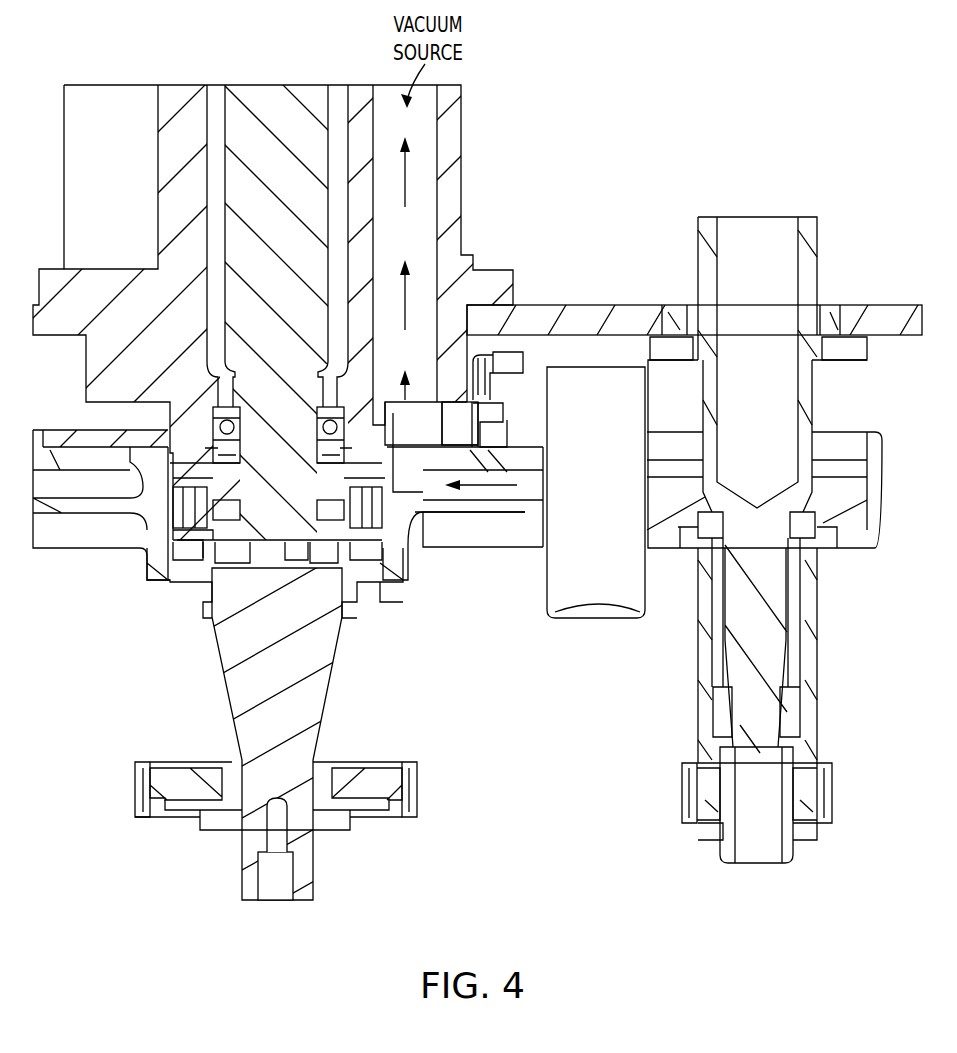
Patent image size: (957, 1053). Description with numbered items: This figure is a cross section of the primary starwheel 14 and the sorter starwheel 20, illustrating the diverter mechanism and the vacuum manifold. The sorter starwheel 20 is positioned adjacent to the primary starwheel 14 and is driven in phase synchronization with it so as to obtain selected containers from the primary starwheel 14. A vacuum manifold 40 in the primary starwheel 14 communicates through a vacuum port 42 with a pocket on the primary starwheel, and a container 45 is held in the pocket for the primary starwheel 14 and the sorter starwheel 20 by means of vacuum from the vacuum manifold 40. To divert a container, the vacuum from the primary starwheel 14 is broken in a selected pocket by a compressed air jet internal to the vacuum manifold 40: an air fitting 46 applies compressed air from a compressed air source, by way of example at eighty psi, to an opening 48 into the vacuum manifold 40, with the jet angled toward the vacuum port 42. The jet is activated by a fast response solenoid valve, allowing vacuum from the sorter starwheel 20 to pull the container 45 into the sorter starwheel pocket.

The primary starwheel 14 is at (424, 548).
The sorter starwheel 20 is at (660, 550).
The vacuum manifold 40 is at (462, 432).
The vacuum port 42 is at (490, 488).
The container 45 is at (592, 582).
The air fitting 46 is at (510, 348).
The opening 48 is at (488, 436).